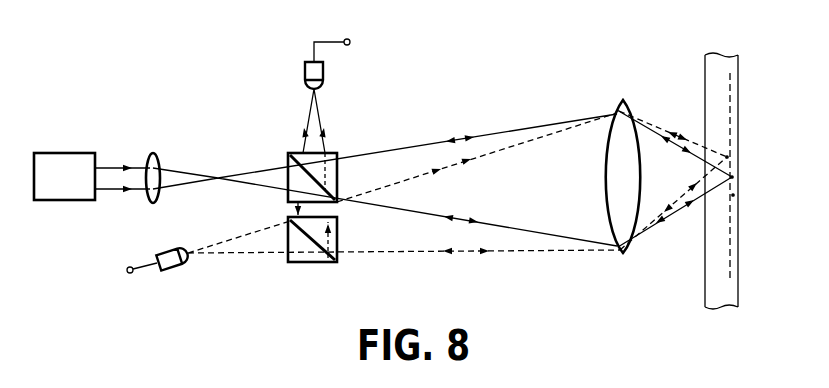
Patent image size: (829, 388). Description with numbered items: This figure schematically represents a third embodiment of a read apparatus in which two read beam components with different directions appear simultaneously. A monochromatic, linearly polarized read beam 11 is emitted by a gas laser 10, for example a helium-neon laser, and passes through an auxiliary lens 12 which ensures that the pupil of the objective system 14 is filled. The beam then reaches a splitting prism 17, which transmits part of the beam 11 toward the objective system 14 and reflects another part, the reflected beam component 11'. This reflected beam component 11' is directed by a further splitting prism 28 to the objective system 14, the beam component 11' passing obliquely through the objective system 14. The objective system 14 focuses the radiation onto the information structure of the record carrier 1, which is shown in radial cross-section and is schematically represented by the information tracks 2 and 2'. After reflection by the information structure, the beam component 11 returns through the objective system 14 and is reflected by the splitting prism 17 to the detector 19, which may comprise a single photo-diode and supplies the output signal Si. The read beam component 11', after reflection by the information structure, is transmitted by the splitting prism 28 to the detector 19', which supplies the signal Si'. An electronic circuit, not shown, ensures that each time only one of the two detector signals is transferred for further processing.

The record carrier 1 is at (736, 118).
The information track 2 is at (747, 182).
The information track 2' is at (746, 177).
The gas laser 10 is at (69, 153).
The read beam 11 is at (356, 176).
The reflected beam component 11' is at (404, 209).
The auxiliary lens 12 is at (152, 152).
The objective system 14 is at (623, 253).
The splitting prism 17 is at (338, 171).
The detector 19 is at (318, 92).
The detector 19' is at (152, 276).
The further splitting prism 28 is at (313, 262).